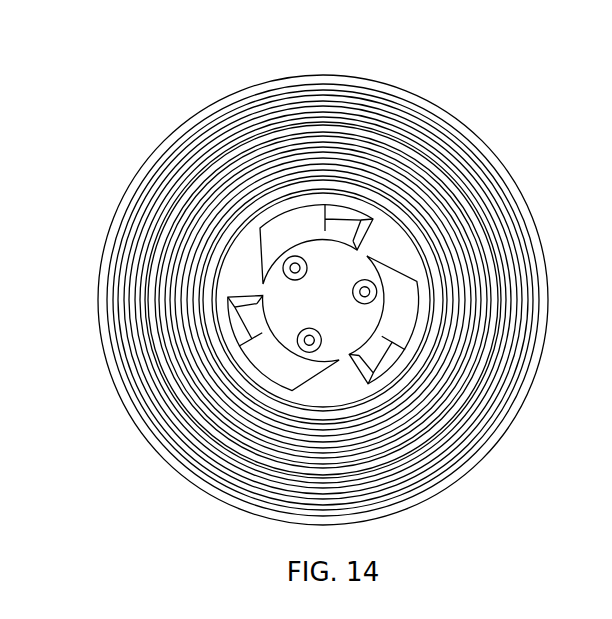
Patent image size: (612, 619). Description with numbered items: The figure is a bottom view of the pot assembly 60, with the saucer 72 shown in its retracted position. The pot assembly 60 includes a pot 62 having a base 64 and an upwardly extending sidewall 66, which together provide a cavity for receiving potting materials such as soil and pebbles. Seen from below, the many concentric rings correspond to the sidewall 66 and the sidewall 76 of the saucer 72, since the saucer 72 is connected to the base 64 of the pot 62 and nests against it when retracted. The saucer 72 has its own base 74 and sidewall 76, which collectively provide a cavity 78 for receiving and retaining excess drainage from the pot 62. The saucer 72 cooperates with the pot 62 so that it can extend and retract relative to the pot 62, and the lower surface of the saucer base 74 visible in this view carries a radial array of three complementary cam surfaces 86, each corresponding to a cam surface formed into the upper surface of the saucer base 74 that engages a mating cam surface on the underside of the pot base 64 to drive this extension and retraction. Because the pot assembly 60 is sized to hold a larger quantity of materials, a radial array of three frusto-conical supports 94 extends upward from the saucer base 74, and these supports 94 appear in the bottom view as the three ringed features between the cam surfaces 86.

The pot assembly 60 is at (403, 66).
The pot 62 is at (471, 132).
The base 64 is at (611, 24).
The sidewall 66 is at (483, 318).
The saucer 72 is at (407, 234).
The base 74 is at (330, 302).
The sidewall 76 is at (425, 297).
The cavity 78 is at (611, 48).
The cam surface 86 is at (333, 207).
The frusto-conical supports 94 is at (372, 282).